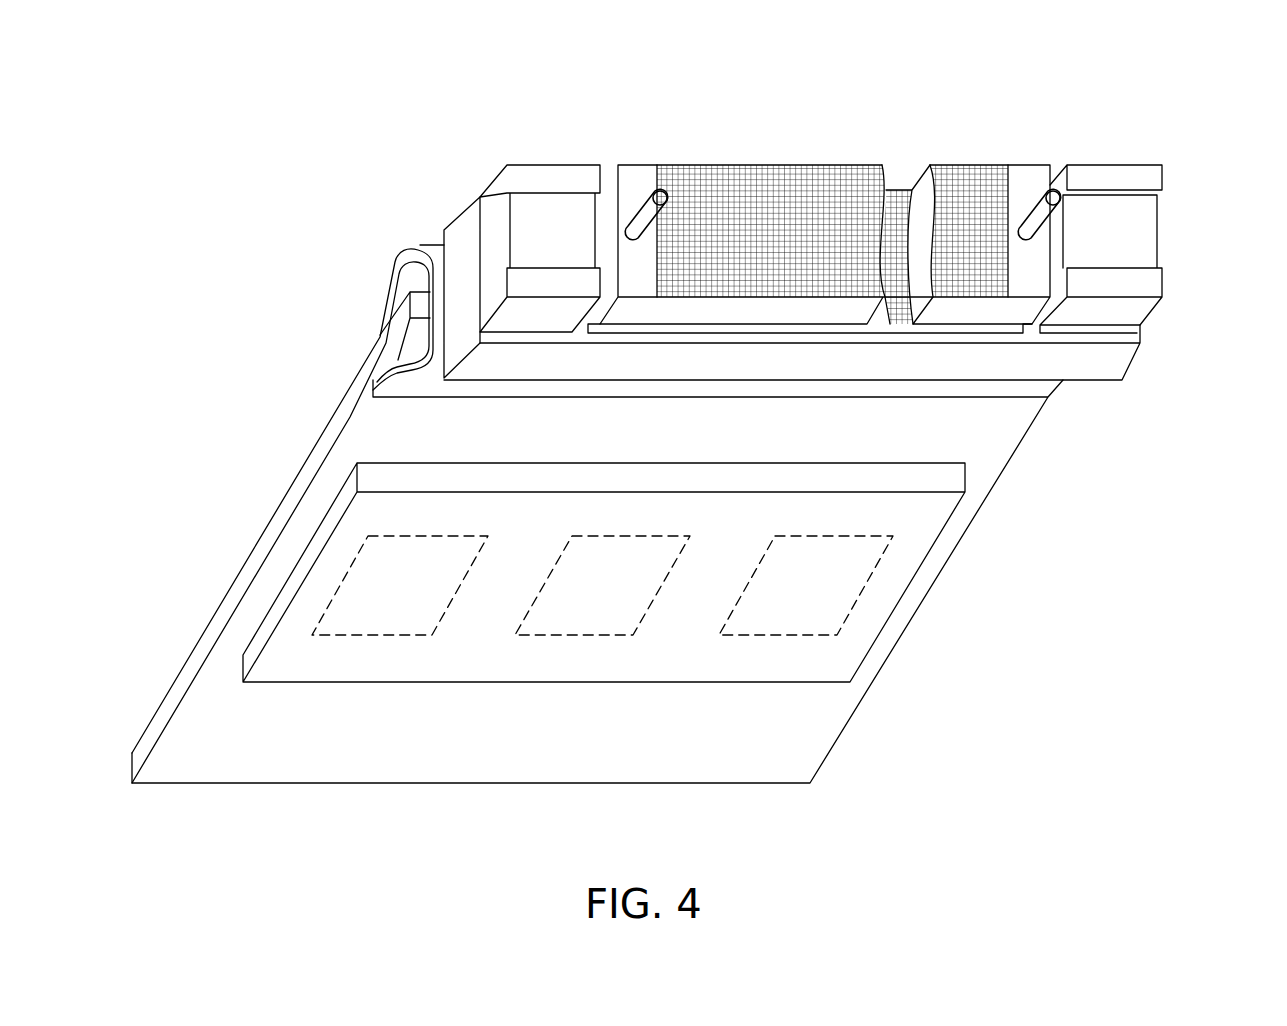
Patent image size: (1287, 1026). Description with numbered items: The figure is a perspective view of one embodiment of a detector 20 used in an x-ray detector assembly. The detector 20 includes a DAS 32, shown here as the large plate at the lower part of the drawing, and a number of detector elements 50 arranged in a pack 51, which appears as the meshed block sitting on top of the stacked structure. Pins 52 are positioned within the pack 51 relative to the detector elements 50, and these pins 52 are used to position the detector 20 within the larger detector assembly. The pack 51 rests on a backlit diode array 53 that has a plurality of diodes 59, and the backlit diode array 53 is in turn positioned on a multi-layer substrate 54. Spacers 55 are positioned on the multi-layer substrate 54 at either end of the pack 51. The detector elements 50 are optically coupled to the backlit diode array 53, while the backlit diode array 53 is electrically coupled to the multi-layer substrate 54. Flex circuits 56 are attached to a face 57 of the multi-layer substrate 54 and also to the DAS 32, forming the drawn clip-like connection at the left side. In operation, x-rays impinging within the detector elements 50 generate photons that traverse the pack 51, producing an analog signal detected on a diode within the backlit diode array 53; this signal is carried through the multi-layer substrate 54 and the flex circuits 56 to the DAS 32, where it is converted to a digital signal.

The detector 20 is at (1069, 118).
The DAS 32 is at (910, 597).
The detector elements 50 is at (745, 180).
The pack 51 is at (656, 118).
The pins 52 is at (654, 212).
The backlit diode array 53 is at (1005, 330).
The multi-layer substrate 54 is at (1120, 362).
The spacers 55 is at (540, 167).
The flex circuits 56 is at (398, 362).
The face 57 is at (443, 237).
The diodes 59 is at (902, 188).